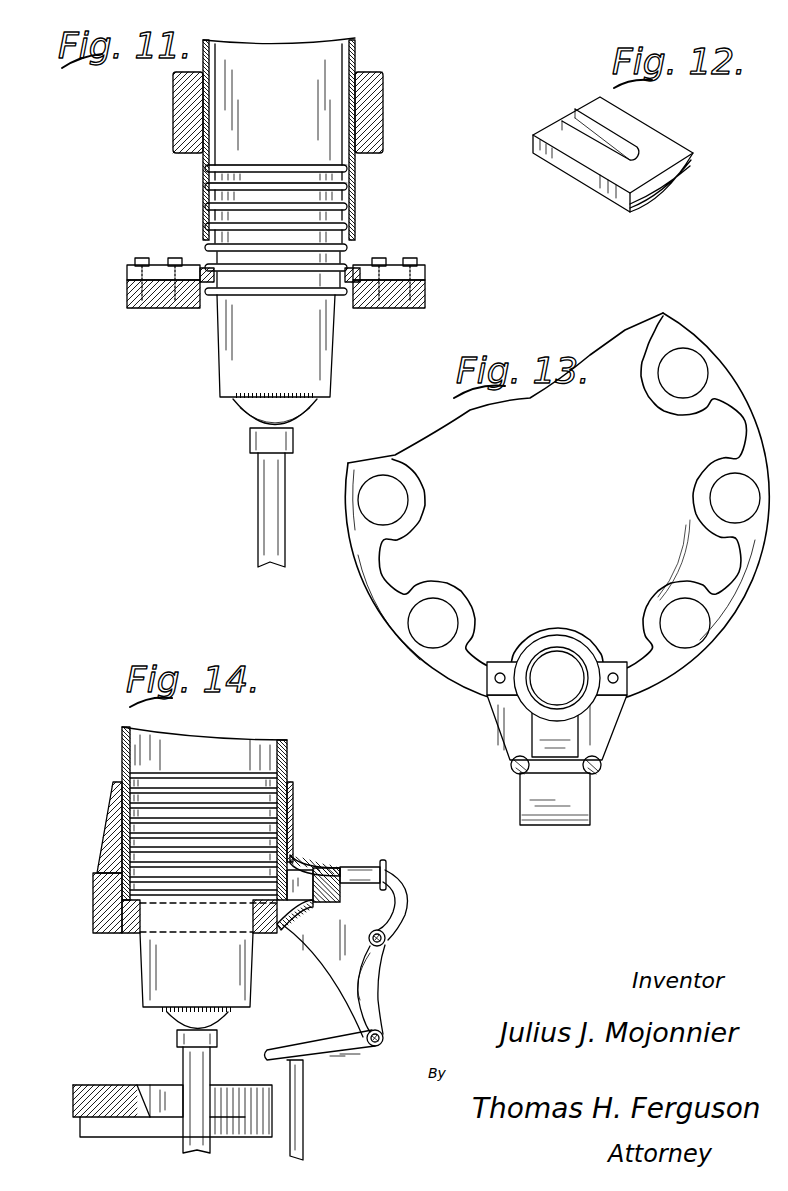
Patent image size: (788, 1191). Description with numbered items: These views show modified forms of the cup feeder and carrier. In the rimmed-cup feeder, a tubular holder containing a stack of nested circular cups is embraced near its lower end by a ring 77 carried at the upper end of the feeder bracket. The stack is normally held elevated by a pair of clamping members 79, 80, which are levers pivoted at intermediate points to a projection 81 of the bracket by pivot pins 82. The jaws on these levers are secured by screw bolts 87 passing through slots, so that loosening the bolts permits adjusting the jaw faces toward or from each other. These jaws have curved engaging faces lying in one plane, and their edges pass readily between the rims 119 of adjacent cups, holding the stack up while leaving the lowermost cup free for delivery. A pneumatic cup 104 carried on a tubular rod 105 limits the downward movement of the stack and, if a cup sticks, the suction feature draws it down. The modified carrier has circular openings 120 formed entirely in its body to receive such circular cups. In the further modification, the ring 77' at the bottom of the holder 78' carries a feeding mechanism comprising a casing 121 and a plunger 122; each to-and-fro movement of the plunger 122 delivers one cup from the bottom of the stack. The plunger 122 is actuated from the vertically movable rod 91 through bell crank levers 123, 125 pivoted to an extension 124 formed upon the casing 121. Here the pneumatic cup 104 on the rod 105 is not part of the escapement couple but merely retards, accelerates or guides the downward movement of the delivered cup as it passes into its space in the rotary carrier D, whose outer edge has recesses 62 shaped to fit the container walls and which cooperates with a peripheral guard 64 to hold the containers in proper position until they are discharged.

In FIG. 11, the holder 78' is at (300, 132).
In FIG. 13, the holder 78' is at (557, 656).
In FIG. 14, the holder 78' is at (226, 813).
In FIG. 11, the ring 77 is at (296, 109).
In FIG. 13, the ring 77 is at (557, 642).
In FIG. 14, the ring 77' is at (166, 857).
In FIG. 11, the rims 119 is at (205, 170).
In FIG. 13, the circular openings 120 is at (420, 600).
In FIG. 14, the casing 121 is at (302, 840).
In FIG. 14, the plunger 122 is at (362, 866).
In FIG. 14, the bell crank lever 123 is at (404, 906).
In FIG. 14, the extension 124 is at (360, 947).
In FIG. 14, the bell crank lever 125 is at (378, 1014).
In FIG. 14, the rotary carrier D is at (92, 1085).
In FIG. 11, the clamping member 79 is at (160, 309).
In FIG. 13, the clamping member 79 is at (514, 722).
In FIG. 11, the clamping member 80 is at (372, 309).
In FIG. 13, the clamping member 80 is at (608, 733).
In FIG. 13, the projection 81 is at (572, 827).
In FIG. 13, the pivot pin 82 is at (516, 778).
In FIG. 11, the screw bolts 87 is at (143, 258).
In FIG. 13, the screw bolts 87 is at (496, 682).
In FIG. 11, the pneumatic cup 104 is at (242, 417).
In FIG. 14, the pneumatic cup 104 is at (167, 1020).
In FIG. 11, the tubular rod 105 is at (266, 517).
In FIG. 14, the tubular rod 105 is at (212, 1062).
In FIG. 14, the recesses 62 is at (148, 1085).
In FIG. 14, the peripheral guard 64 is at (270, 1138).
In FIG. 14, the rod 91 is at (305, 1072).